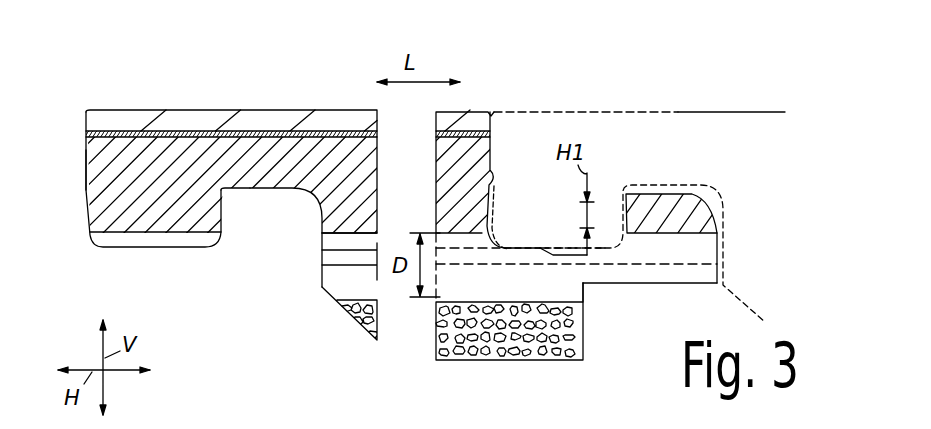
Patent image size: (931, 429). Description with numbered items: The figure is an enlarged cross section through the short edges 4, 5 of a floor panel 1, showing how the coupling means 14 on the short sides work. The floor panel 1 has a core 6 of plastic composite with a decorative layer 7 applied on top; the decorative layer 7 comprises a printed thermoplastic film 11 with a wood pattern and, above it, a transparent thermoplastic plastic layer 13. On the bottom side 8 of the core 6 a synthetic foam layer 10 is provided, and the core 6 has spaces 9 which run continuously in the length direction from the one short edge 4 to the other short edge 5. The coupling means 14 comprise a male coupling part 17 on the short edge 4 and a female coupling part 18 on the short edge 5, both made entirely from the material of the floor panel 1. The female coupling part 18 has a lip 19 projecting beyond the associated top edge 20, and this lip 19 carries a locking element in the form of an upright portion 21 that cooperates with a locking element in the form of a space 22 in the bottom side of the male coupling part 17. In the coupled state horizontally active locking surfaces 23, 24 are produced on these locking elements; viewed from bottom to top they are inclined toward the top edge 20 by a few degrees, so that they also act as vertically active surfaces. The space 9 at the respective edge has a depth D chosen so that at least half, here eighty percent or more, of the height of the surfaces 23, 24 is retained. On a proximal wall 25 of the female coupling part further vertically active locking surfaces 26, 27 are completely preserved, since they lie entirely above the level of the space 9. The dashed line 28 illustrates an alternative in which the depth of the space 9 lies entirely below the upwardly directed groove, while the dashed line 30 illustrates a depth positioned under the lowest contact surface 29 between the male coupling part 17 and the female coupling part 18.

The floor panel 1 is at (249, 106).
The short edge 4 is at (598, 102).
The short edge 5 is at (113, 286).
The core 6 is at (362, 212).
The decorative layer 7 is at (70, 140).
The bottom side 8 is at (533, 305).
The space 9 is at (334, 276).
The synthetic foam layer 10 is at (455, 355).
The printed thermoplastic film 11 is at (177, 135).
The transparent thermoplastic plastic layer 13 is at (210, 128).
The coupling means 14 is at (745, 167).
The male coupling part 17 is at (150, 199).
The female coupling part 18 is at (553, 197).
The lip 19 is at (537, 277).
The top edge 20 is at (490, 110).
The upright portion 21 is at (720, 267).
The space 22 is at (272, 210).
The horizontally active locking surface 23 is at (220, 208).
The horizontally active locking surface 24 is at (624, 222).
The proximal wall 25 is at (504, 156).
The vertically active locking surface 26 is at (86, 185).
The vertically active locking surface 27 is at (490, 192).
The dashed line 28 is at (670, 262).
The lowest contact surface 29 is at (523, 252).
The dashed line 30 is at (635, 262).